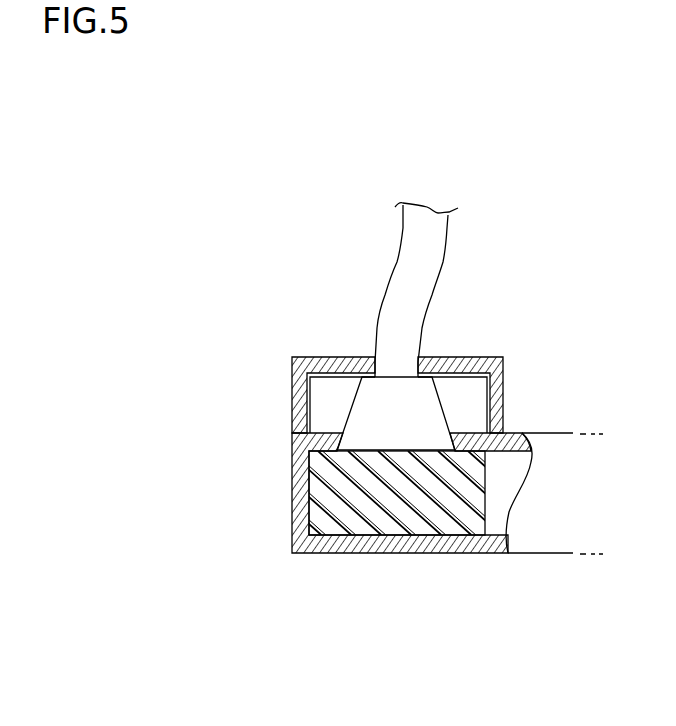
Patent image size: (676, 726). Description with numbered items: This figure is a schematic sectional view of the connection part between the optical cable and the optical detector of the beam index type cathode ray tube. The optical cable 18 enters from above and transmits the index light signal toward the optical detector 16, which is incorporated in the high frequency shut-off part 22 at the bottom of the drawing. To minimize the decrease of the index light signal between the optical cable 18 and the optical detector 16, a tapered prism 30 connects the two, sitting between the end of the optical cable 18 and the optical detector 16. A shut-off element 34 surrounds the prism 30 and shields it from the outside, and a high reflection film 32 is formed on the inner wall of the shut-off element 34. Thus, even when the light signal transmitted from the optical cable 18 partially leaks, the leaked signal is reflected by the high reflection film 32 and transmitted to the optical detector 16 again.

The optical detector 16 is at (360, 537).
The optical cable 18 is at (447, 252).
The high frequency shut-off part 22 is at (555, 548).
The prism 30 is at (358, 405).
The high reflection film 32 is at (488, 393).
The shut-off element 34 is at (485, 358).